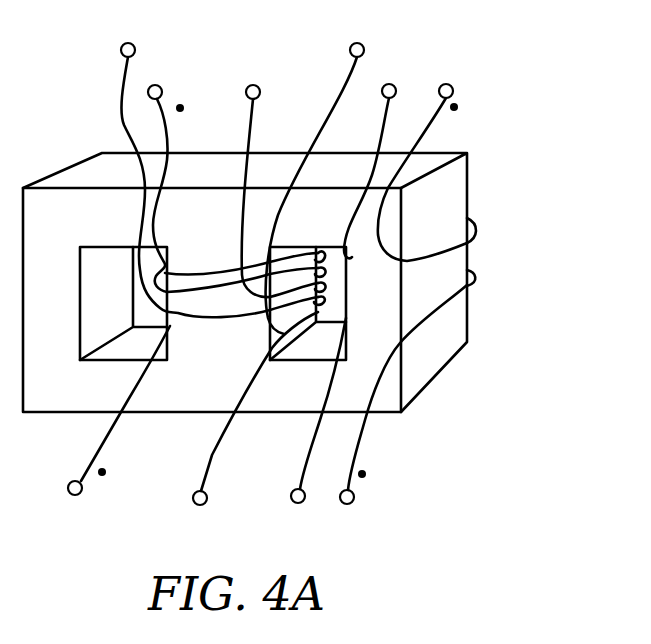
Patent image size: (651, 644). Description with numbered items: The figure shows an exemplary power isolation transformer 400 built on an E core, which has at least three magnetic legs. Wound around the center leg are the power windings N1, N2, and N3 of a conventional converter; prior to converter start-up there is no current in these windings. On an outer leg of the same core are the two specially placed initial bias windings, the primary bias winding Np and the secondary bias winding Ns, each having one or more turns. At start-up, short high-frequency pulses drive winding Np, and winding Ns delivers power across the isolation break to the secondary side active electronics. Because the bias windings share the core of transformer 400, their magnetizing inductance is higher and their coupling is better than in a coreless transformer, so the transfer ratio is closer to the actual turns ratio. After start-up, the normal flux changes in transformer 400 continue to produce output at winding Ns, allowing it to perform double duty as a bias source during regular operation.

The isolation transformer 400 is at (497, 151).
The primary bias winding Np is at (427, 149).
The secondary bias winding Ns is at (359, 321).
The power winding N1 is at (236, 175).
The power winding N2 is at (347, 46).
The power winding N3 is at (193, 421).